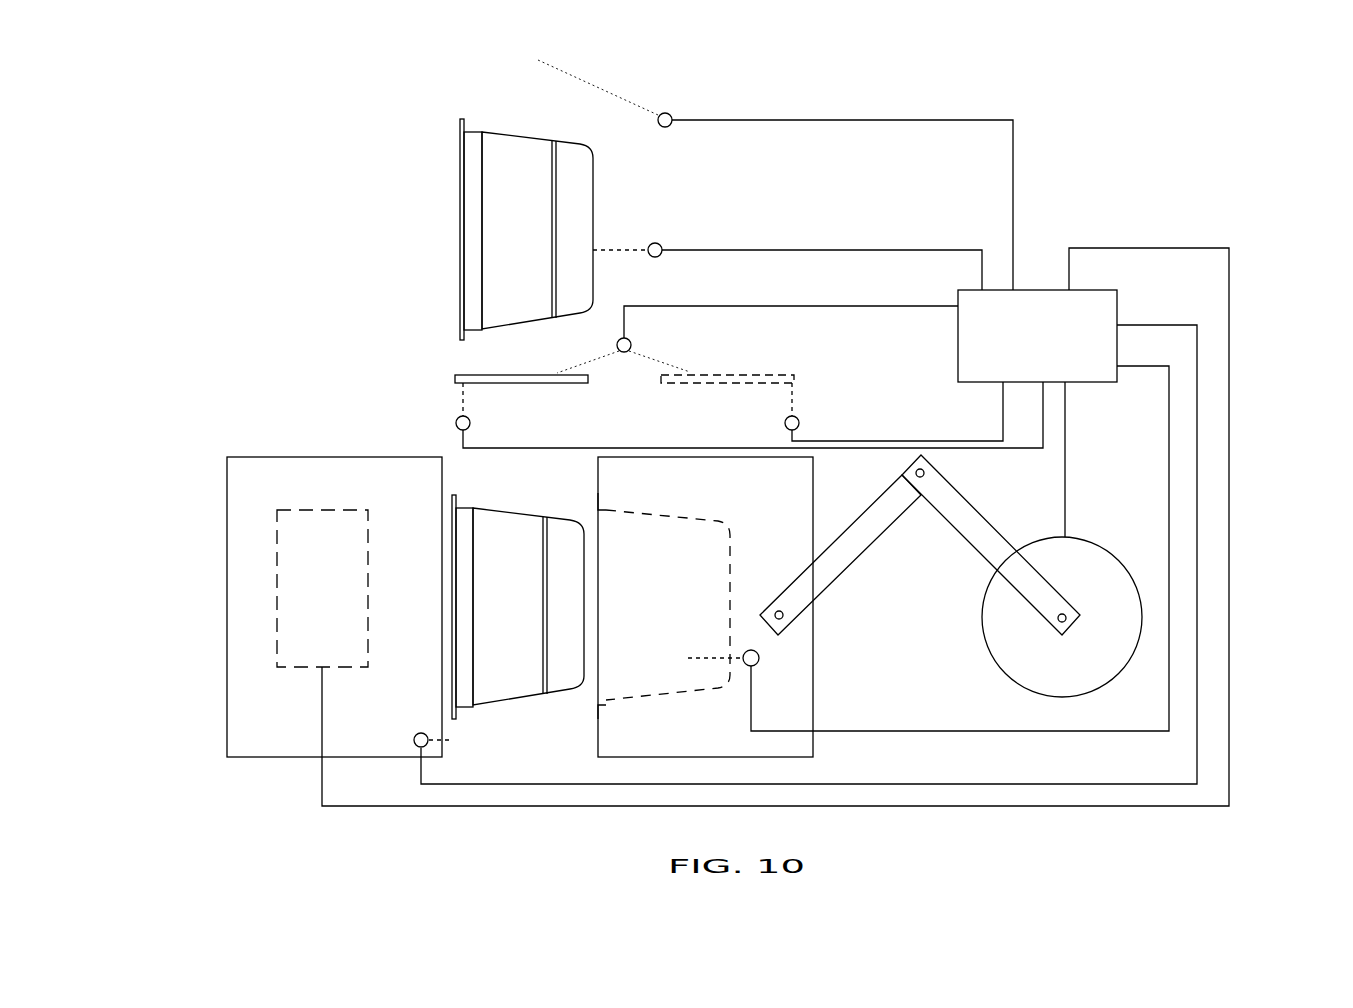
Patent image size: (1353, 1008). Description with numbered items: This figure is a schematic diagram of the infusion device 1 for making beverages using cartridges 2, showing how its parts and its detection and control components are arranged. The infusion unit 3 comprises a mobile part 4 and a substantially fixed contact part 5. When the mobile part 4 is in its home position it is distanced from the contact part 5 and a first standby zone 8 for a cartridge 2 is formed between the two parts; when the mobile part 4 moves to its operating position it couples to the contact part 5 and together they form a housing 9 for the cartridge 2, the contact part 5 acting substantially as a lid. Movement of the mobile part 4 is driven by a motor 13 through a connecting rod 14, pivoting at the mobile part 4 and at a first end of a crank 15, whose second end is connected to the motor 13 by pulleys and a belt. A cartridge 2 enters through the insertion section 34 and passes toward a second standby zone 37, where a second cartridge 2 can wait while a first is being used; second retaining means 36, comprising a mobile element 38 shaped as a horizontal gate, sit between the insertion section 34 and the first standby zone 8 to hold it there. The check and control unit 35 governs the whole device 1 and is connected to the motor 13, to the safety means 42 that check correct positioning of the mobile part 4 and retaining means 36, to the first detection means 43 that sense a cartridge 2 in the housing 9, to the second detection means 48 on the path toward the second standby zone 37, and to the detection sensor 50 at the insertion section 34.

The infusion device 1 is at (1192, 191).
The cartridge 2 is at (520, 206).
The infusion unit 3 is at (259, 597).
The mobile part 4 is at (673, 726).
The fixed contact part 5 is at (278, 715).
The first standby zone 8 is at (508, 718).
The housing 9 is at (660, 597).
The motor 13 is at (1052, 660).
The connecting rod 14 is at (877, 523).
The crank 15 is at (987, 537).
The insertion section 34 is at (458, 80).
The check and control unit 35 is at (1104, 333).
The second retaining means 36 is at (428, 370).
The second standby zone 37 is at (399, 254).
The mobile element 38 is at (480, 375).
The safety means 42 is at (617, 345).
The first detection means 43 is at (751, 666).
The second detection means 48 is at (662, 247).
The detection sensor 50 is at (672, 118).